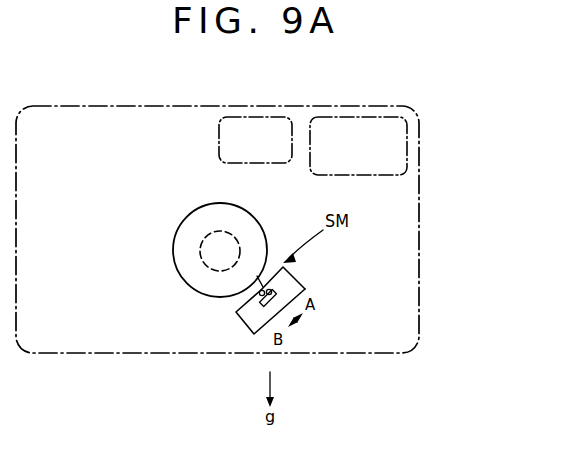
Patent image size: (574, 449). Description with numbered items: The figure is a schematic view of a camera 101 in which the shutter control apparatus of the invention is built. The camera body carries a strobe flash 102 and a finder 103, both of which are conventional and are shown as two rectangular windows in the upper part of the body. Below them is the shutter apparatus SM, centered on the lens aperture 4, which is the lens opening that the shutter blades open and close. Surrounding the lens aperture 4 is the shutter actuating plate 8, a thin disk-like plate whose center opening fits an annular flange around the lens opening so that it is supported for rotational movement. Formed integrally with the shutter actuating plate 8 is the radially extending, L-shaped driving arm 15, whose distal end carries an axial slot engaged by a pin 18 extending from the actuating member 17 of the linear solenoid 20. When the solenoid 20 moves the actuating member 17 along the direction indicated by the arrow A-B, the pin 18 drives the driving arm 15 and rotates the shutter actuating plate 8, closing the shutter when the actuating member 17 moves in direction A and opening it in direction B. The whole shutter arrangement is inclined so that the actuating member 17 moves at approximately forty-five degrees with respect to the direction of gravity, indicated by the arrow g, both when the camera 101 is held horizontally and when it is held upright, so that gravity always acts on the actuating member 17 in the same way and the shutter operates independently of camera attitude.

The lens aperture 4 is at (238, 242).
The shutter actuating plate 8 is at (173, 255).
The driving arm 15 is at (252, 292).
The actuating member 17 is at (305, 290).
The pin 18 is at (248, 315).
The linear solenoid 20 is at (281, 293).
The camera 101 is at (420, 222).
The strobe flash 102 is at (357, 117).
The finder 103 is at (253, 117).